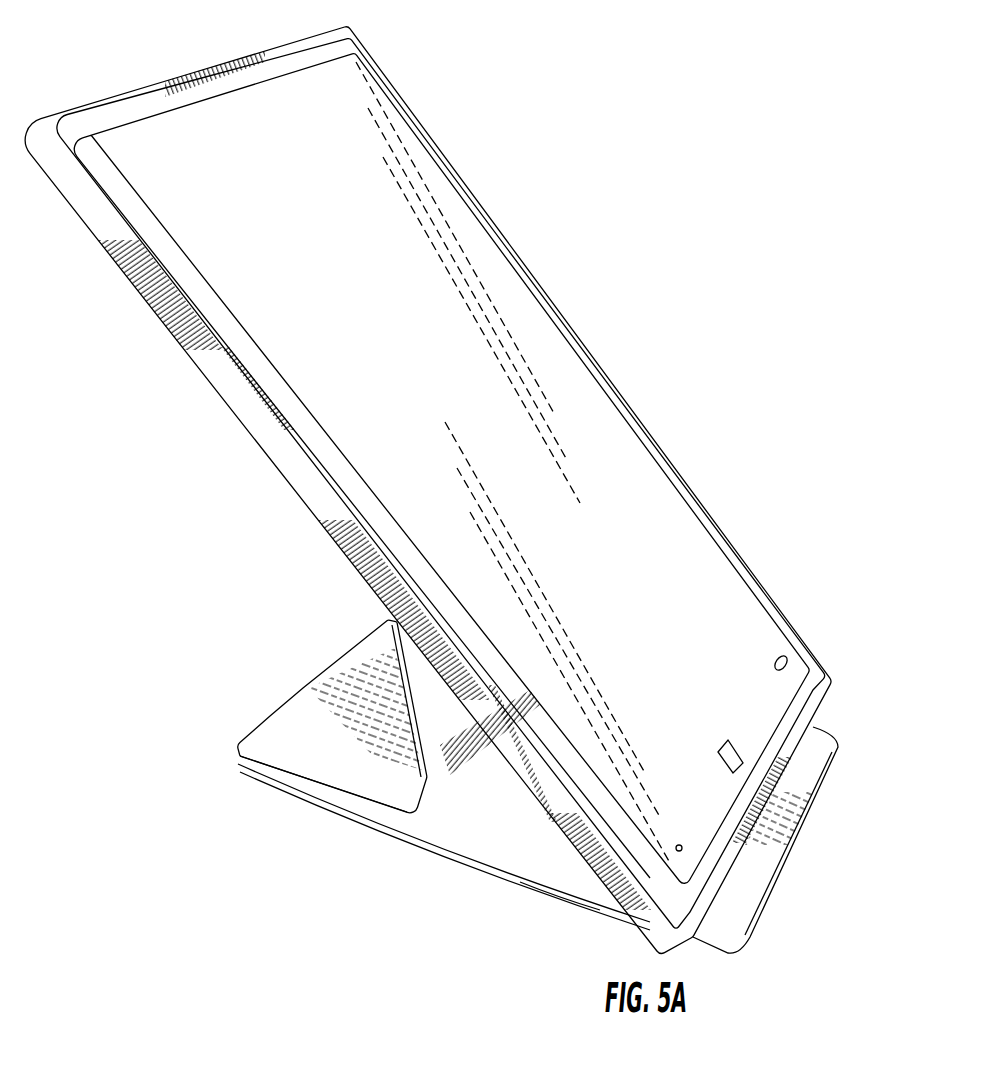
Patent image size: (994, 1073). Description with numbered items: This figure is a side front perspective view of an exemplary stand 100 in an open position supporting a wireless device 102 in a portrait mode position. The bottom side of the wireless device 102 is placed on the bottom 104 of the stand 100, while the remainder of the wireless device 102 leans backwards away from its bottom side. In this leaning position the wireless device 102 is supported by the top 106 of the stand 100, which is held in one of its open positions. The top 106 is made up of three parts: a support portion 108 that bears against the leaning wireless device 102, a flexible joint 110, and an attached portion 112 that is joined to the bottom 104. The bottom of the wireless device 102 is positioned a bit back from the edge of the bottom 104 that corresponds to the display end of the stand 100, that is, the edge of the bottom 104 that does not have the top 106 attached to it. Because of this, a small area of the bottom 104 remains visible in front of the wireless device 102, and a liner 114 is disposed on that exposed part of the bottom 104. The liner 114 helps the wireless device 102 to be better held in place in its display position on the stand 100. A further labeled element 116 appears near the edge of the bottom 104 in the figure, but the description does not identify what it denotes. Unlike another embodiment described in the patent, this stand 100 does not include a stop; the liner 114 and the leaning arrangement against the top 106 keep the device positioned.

The stand 100 is at (203, 781).
The wireless device 102 is at (417, 108).
The bottom 104 is at (498, 872).
The top 106 is at (275, 735).
The support portion 108 is at (400, 670).
The flexible joint 110 is at (400, 827).
The attached portion 112 is at (290, 788).
The liner 114 is at (760, 860).
The flap edge 116 is at (567, 872).